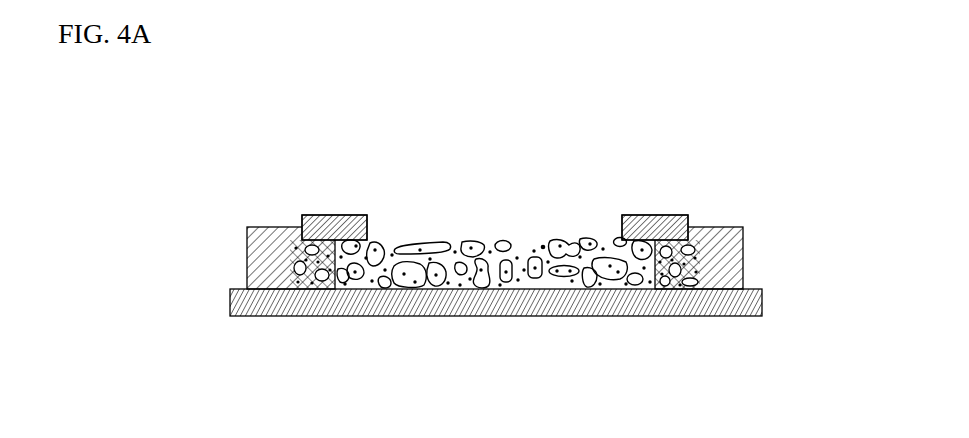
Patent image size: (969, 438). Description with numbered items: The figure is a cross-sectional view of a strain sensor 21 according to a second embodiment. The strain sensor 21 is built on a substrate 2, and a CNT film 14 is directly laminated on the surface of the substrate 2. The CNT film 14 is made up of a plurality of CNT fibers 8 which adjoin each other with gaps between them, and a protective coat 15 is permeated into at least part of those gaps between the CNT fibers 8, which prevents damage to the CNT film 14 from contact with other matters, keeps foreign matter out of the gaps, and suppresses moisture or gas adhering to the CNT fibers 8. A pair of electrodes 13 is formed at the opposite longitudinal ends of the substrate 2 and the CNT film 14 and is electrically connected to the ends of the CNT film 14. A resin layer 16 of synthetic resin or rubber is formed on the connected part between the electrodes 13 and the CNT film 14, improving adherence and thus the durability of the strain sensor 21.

The strain sensor 21 is at (693, 136).
The substrate 2 is at (757, 307).
The electrodes 13 is at (743, 255).
The resin layer 16 is at (647, 214).
The CNT film 14 is at (521, 245).
The protective coat 15 is at (436, 242).
The CNT fibers 8 is at (543, 245).